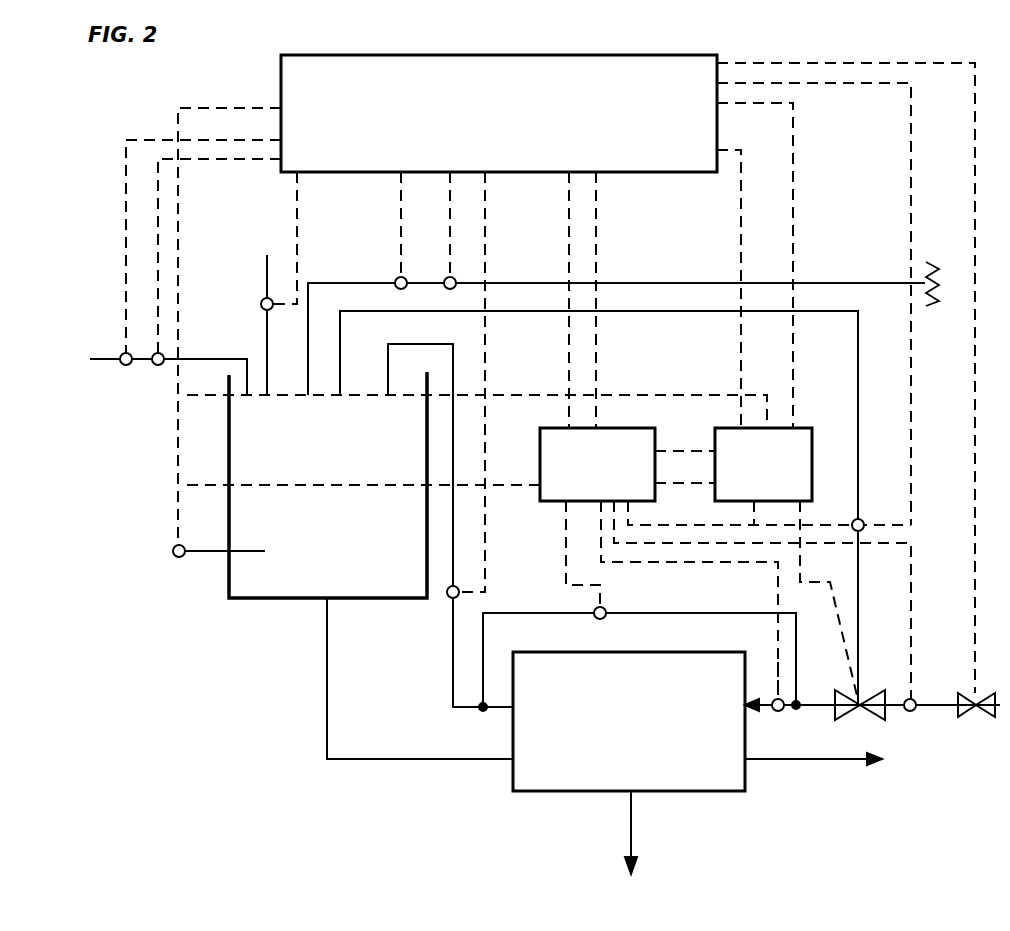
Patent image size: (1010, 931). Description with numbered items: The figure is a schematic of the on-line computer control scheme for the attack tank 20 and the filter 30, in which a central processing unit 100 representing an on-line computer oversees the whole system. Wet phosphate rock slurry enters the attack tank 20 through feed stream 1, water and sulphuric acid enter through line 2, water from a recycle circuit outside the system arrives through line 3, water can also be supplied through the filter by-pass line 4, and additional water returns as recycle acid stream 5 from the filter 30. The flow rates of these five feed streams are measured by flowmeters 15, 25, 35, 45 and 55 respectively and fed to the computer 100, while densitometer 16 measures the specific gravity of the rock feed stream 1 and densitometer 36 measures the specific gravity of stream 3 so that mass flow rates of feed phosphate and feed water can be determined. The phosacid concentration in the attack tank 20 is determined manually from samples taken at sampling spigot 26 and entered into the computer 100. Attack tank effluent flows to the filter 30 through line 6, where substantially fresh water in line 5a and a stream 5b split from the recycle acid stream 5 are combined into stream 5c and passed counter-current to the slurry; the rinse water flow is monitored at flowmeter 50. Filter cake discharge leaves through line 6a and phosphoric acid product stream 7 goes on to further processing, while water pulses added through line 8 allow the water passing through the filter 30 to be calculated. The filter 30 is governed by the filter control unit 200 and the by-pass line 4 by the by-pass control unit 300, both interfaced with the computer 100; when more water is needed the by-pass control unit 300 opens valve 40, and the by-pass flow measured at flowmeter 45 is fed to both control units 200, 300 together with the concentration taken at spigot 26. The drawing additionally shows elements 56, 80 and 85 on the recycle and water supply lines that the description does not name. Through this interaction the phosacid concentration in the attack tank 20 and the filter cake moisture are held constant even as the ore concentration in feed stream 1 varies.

The feed stream 1 is at (168, 364).
The line 2 is at (276, 325).
The line 3 is at (623, 328).
The filter by-pass line 4 is at (599, 508).
The recycle acid stream 5 is at (450, 513).
The substantially fresh water line 5a is at (872, 694).
The split recycle acid water stream 5b is at (637, 649).
The combined rinse stream 5c is at (764, 682).
The attack tank effluent line 6 is at (420, 678).
The filter cake discharge line 6a is at (813, 750).
The phosphoric acid product stream 7 is at (638, 832).
The water pulse line 8 is at (937, 722).
The flowmeter 15 is at (126, 375).
The densitometer 16 is at (160, 375).
The attack tank 20 is at (313, 549).
The flowmeter 25 is at (254, 314).
The sampling spigot 26 is at (206, 565).
The countercurrent filter cake rinse unit 30 is at (616, 738).
The flowmeter 35 is at (388, 271).
The densitometer 36 is at (437, 271).
The valve 40 is at (860, 717).
The flowmeter 45 is at (871, 512).
The flowmeter 50 is at (768, 722).
The flowmeter 55 is at (441, 607).
The valve 56 is at (585, 604).
The control valve 80 is at (976, 719).
The sensor 85 is at (896, 689).
The central processing unit 100 is at (481, 121).
The filter control unit 200 is at (579, 476).
The by-pass control unit 300 is at (745, 476).